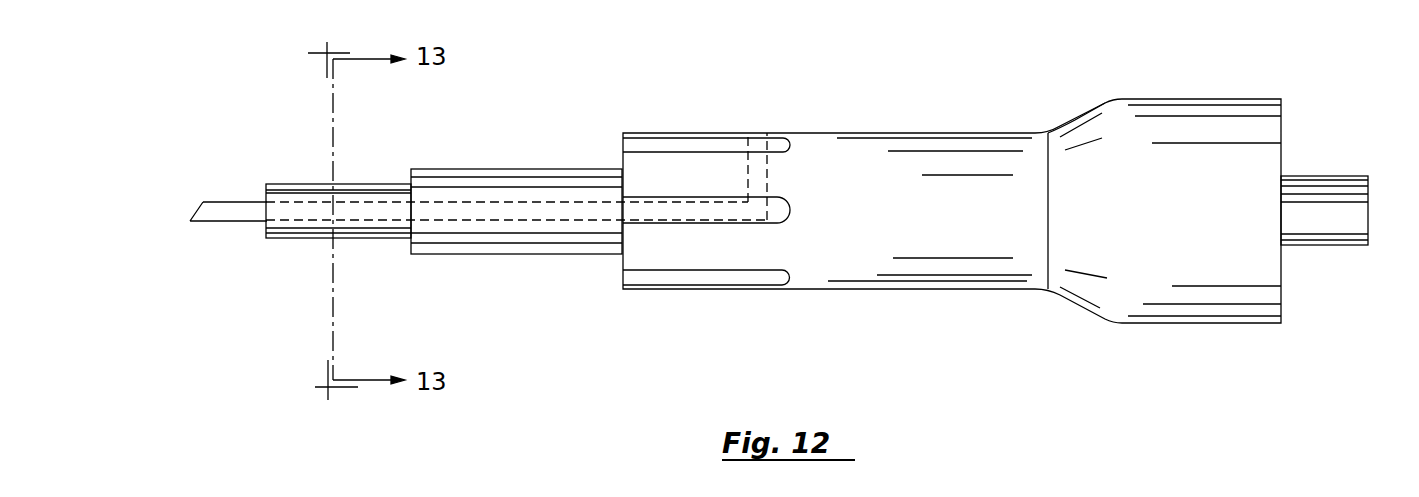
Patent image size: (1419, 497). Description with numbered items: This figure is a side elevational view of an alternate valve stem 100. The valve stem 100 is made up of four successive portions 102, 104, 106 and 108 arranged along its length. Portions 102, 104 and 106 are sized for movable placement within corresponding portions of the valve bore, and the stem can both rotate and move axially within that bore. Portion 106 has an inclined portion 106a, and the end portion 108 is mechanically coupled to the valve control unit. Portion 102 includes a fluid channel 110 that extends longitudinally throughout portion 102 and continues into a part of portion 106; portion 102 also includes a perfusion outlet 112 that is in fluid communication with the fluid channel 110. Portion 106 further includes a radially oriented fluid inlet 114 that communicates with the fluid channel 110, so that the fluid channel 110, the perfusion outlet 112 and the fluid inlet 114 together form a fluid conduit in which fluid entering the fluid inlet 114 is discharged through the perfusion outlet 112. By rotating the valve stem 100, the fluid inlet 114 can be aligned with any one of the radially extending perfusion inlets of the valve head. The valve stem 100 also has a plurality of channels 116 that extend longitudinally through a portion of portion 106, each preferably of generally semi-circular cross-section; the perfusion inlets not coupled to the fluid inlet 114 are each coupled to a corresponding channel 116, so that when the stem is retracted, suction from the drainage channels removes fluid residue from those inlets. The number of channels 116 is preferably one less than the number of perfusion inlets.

The valve stem 100 is at (900, 377).
The portion 102 is at (308, 238).
The portion 104 is at (480, 171).
The portion 106 is at (975, 290).
The inclined portion 106a is at (1075, 118).
The portion 108 is at (1320, 247).
The fluid channel 110 is at (476, 214).
The perfusion outlet 112 is at (232, 207).
The fluid inlet 114 is at (767, 177).
The channels 116 is at (790, 143).